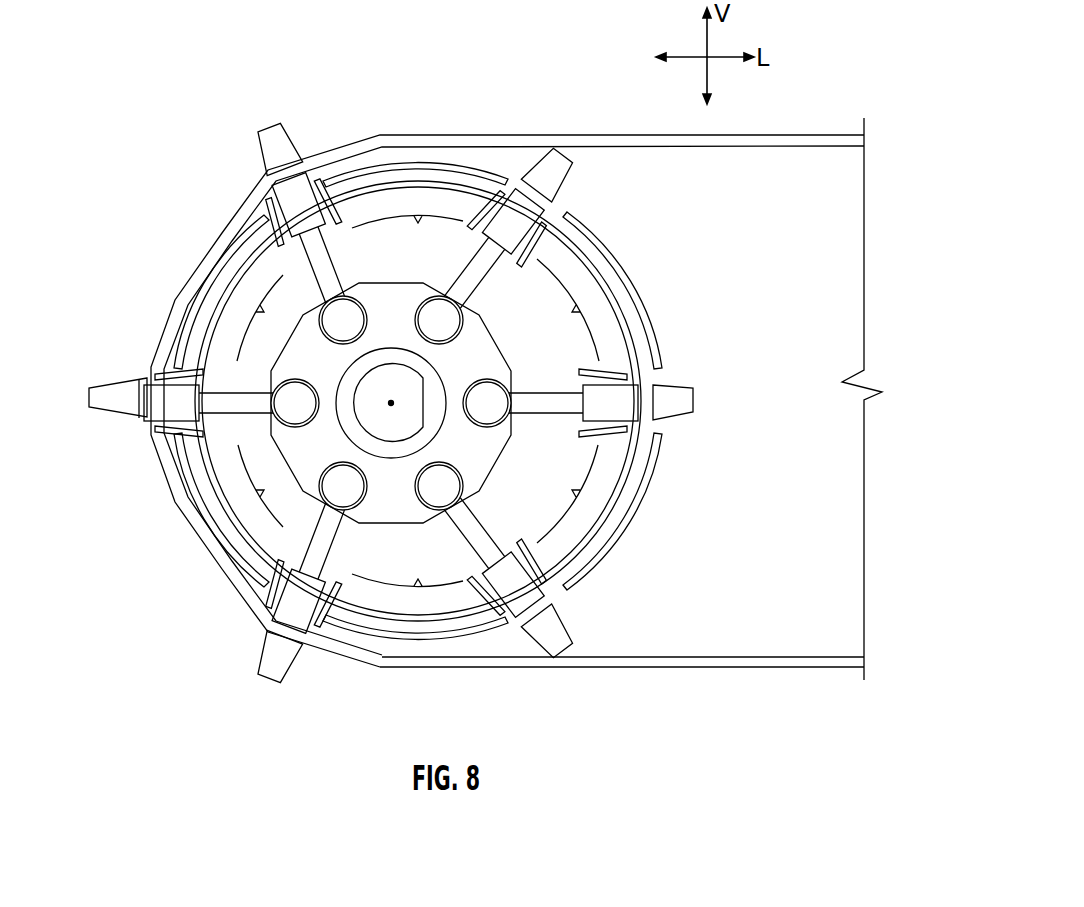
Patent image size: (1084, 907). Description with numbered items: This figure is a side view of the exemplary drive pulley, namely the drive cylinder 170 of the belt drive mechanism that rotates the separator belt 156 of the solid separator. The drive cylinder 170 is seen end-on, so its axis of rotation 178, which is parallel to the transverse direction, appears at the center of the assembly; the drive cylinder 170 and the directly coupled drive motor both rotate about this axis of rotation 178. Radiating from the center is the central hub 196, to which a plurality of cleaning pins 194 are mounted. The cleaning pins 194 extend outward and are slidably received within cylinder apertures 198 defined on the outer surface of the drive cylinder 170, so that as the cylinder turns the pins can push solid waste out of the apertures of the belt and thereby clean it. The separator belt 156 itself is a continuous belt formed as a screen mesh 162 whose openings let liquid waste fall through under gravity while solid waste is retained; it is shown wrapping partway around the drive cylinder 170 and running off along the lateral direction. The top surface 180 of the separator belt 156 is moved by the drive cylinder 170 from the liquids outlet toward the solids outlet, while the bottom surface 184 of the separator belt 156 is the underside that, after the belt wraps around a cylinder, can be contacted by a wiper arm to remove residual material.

The separator belt 156 is at (797, 676).
The screen mesh 162 is at (838, 656).
The drive cylinder 170 is at (615, 276).
The axis of rotation 178 is at (393, 403).
The top surface 180 is at (832, 130).
The bottom surface 184 is at (733, 676).
The cleaning pins 194 is at (694, 400).
The central hub 196 is at (302, 455).
The cylinder apertures 198 is at (686, 432).